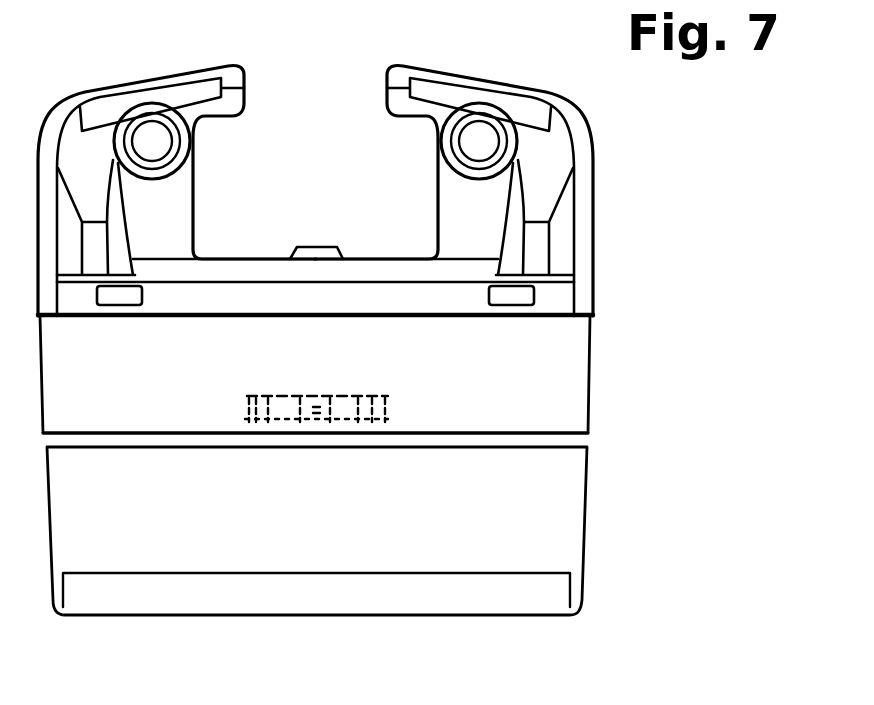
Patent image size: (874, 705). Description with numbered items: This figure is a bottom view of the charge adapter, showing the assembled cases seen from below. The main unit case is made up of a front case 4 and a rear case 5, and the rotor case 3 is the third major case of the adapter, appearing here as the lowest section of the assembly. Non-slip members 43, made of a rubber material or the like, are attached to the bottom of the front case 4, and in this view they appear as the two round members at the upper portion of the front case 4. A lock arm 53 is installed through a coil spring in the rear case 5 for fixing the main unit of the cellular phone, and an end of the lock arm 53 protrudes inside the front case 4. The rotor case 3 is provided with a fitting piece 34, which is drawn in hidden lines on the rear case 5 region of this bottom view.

The rotor case 3 is at (562, 528).
The rear case 5 is at (577, 372).
The front case 4 is at (583, 203).
The non-slip members 43 is at (485, 139).
The lock arm 53 is at (317, 243).
The fitting piece 34 is at (387, 400).